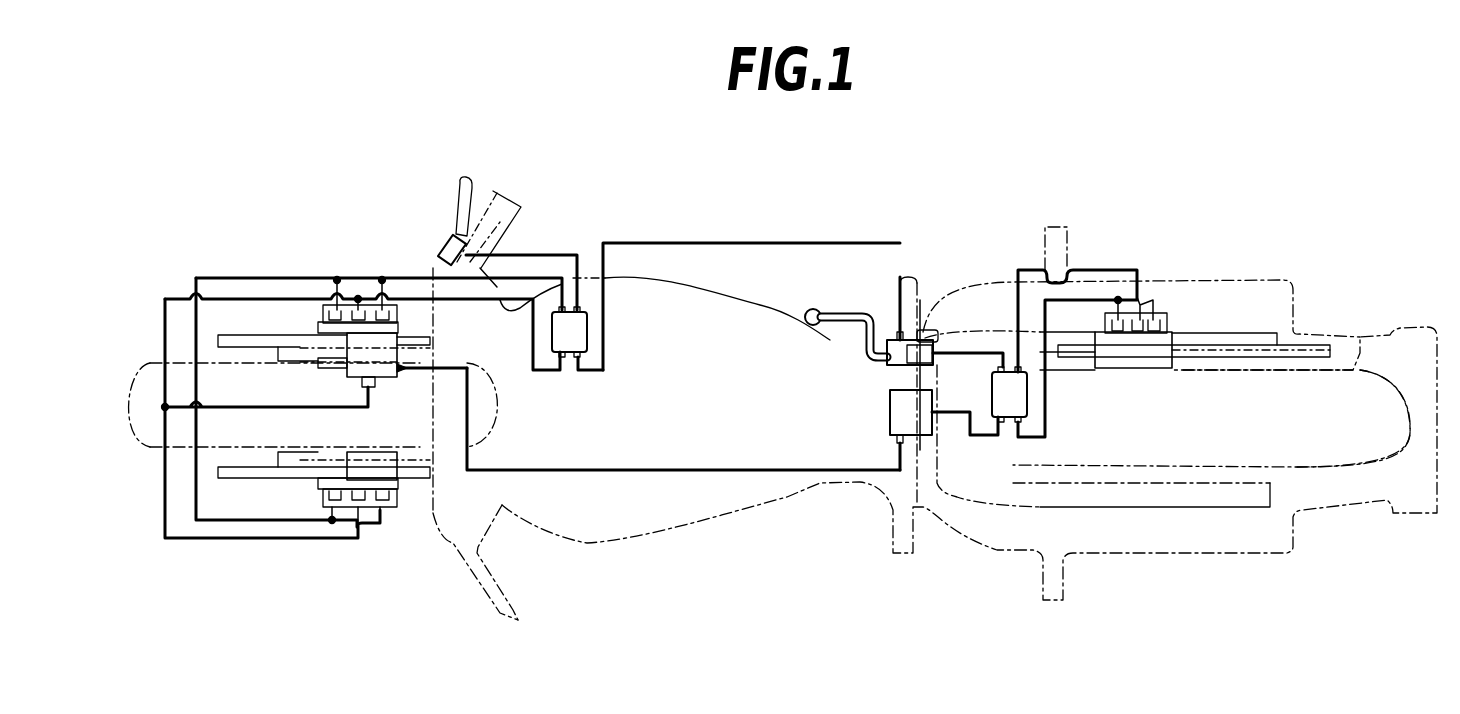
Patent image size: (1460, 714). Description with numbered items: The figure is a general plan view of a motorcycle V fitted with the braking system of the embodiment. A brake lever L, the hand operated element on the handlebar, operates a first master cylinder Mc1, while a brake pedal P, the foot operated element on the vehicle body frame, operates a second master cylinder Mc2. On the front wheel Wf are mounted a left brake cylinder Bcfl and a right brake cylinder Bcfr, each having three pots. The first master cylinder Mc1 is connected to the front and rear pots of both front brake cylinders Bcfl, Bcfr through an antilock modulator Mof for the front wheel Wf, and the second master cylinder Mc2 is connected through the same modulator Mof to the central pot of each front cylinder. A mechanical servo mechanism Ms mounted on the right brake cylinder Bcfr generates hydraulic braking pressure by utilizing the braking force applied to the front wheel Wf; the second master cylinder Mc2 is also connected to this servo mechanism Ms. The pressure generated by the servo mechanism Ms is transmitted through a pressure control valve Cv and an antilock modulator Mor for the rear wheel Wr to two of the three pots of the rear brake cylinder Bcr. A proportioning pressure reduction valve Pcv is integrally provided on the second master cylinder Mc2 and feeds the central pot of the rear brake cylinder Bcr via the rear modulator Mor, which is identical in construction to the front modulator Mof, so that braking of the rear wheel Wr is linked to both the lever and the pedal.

The motorcycle V is at (838, 226).
The brake lever L is at (460, 183).
The first master cylinder Mc1 is at (440, 250).
The front wheel Wf is at (150, 362).
The right brake cylinder Bcfr is at (412, 350).
The mechanical servo mechanism Ms is at (393, 380).
The antilock modulator for the front wheel Mof is at (567, 352).
The left brake cylinder Bcfl is at (397, 482).
The brake pedal P is at (825, 309).
The second master cylinder Mc2 is at (890, 365).
The proportioning pressure reduction valve Pcv is at (920, 343).
The pressure control valve Cv is at (890, 420).
The antilock modulator for the rear wheel Mor is at (1000, 420).
The brake cylinder for the rear wheel Bcr is at (1125, 365).
The rear wheel Wr is at (1360, 342).